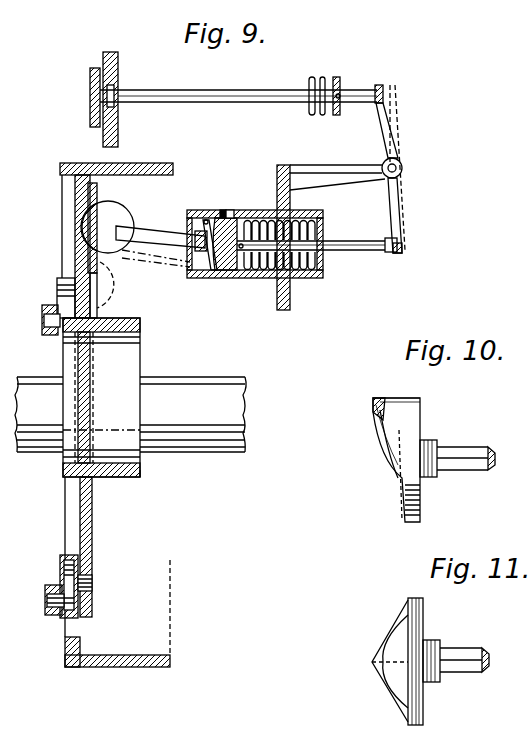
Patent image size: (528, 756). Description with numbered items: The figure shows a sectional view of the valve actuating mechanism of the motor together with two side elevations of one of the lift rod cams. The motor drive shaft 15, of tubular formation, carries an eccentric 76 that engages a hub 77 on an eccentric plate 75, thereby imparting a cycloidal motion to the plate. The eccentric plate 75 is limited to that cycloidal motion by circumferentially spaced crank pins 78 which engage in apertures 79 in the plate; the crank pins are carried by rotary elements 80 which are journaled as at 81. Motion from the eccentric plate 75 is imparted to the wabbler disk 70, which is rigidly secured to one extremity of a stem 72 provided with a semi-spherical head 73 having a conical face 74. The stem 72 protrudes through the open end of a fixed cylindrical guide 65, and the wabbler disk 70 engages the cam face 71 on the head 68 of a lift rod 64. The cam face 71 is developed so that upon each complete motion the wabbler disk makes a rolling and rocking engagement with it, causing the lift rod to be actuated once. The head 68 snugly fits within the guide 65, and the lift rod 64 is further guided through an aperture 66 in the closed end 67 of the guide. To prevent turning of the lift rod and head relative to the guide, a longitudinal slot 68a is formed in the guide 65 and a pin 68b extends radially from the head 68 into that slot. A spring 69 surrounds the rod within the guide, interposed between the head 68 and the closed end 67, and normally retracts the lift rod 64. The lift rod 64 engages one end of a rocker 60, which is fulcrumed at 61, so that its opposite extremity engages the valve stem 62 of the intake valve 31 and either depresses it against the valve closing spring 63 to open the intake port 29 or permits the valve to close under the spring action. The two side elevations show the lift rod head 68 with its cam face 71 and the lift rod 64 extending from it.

In FIG. 9, the motor drive shaft 15 is at (216, 448).
In FIG. 9, the intake port 29 is at (118, 112).
In FIG. 9, the intake valve 31 is at (92, 100).
In FIG. 9, the rocker 60 is at (388, 152).
In FIG. 9, the fulcrum 61 is at (402, 168).
In FIG. 9, the valve stem 62 is at (278, 90).
In FIG. 9, the valve closing spring 63 is at (323, 78).
In FIG. 9, the lift rod 64 is at (378, 246).
In FIG. 10, the lift rod 64 is at (458, 453).
In FIG. 11, the lift rod 64 is at (464, 656).
In FIG. 9, the cylindrical guide 65 is at (258, 214).
In FIG. 9, the aperture 66 is at (322, 233).
In FIG. 9, the closed end 67 is at (300, 278).
In FIG. 9, the head 68 is at (233, 272).
In FIG. 10, the head 68 is at (418, 413).
In FIG. 11, the head 68 is at (418, 618).
In FIG. 9, the longitudinal slot 68a is at (231, 212).
In FIG. 9, the pin 68b is at (224, 212).
In FIG. 9, the spring 69 is at (268, 272).
In FIG. 9, the wabbler disk 70 is at (214, 218).
In FIG. 10, the cam face 71 is at (388, 425).
In FIG. 11, the cam face 71 is at (385, 642).
In FIG. 9, the stem 72 is at (152, 236).
In FIG. 9, the semi-spherical head 73 is at (110, 215).
In FIG. 9, the conical face 74 is at (82, 223).
In FIG. 9, the eccentric plate 75 is at (93, 518).
In FIG. 9, the eccentric 76 is at (128, 385).
In FIG. 9, the hub 77 is at (128, 478).
In FIG. 9, the crank pin 78 is at (94, 584).
In FIG. 9, the aperture 79 is at (88, 572).
In FIG. 9, the rotary element 80 is at (68, 582).
In FIG. 9, the journal 81 is at (50, 601).